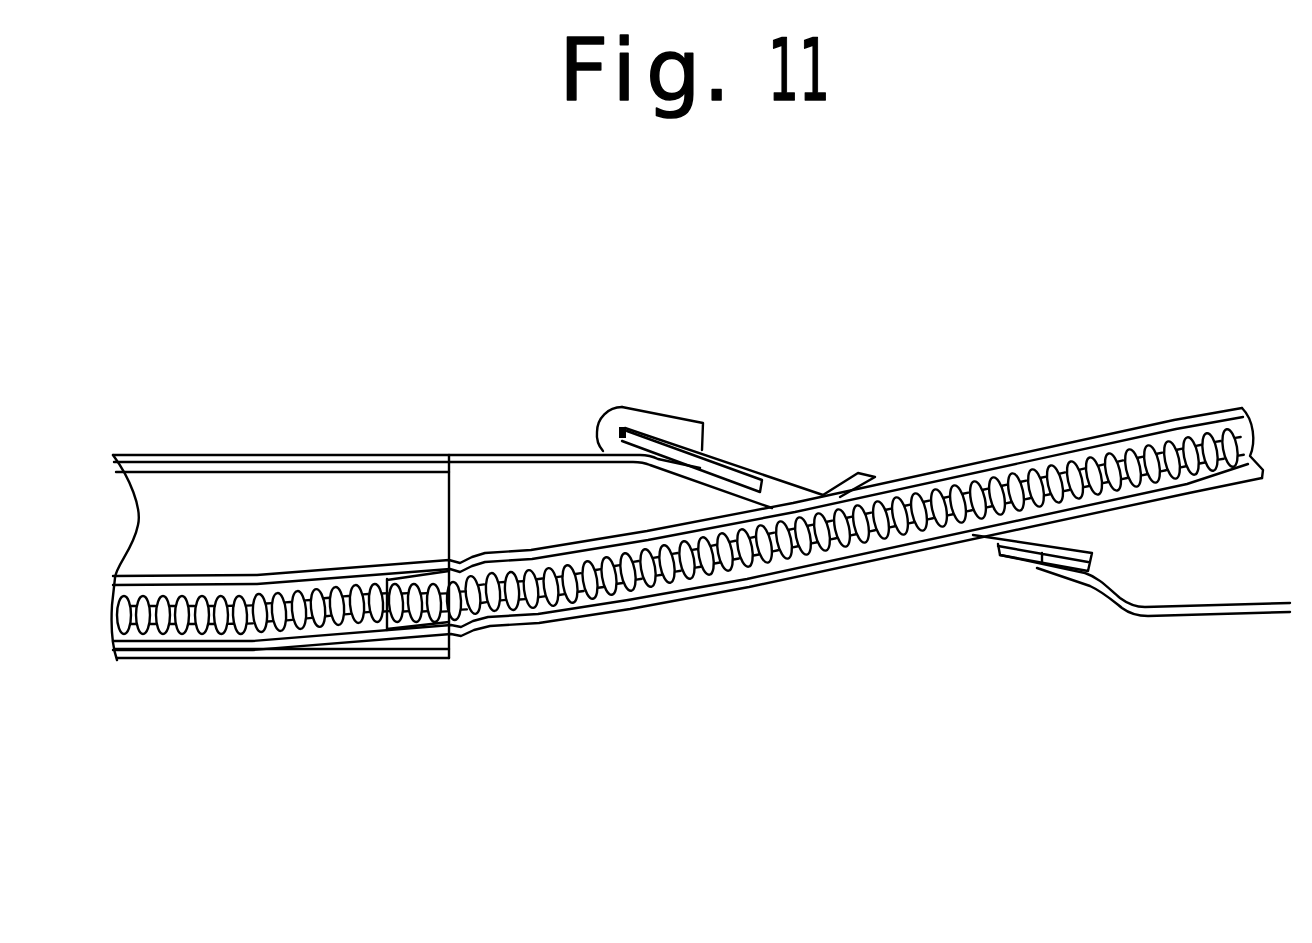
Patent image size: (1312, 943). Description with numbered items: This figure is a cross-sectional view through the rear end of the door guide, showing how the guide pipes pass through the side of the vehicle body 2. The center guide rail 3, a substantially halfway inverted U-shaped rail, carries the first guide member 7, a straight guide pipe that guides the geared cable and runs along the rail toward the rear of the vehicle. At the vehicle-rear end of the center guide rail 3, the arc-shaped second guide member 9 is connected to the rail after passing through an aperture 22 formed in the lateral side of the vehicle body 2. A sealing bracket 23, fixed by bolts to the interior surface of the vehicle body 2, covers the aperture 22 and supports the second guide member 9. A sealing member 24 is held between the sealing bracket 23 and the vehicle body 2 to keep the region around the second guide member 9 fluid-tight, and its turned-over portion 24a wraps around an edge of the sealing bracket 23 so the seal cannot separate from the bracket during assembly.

The vehicle body 2 is at (507, 453).
The center guide rail 3 is at (385, 682).
The first guide member 7 is at (247, 587).
The second guide member 9 is at (677, 600).
The aperture 22 is at (997, 552).
The sealing bracket 23 is at (793, 482).
The sealing member 24 is at (1043, 557).
The turned-over portion 24a is at (657, 418).